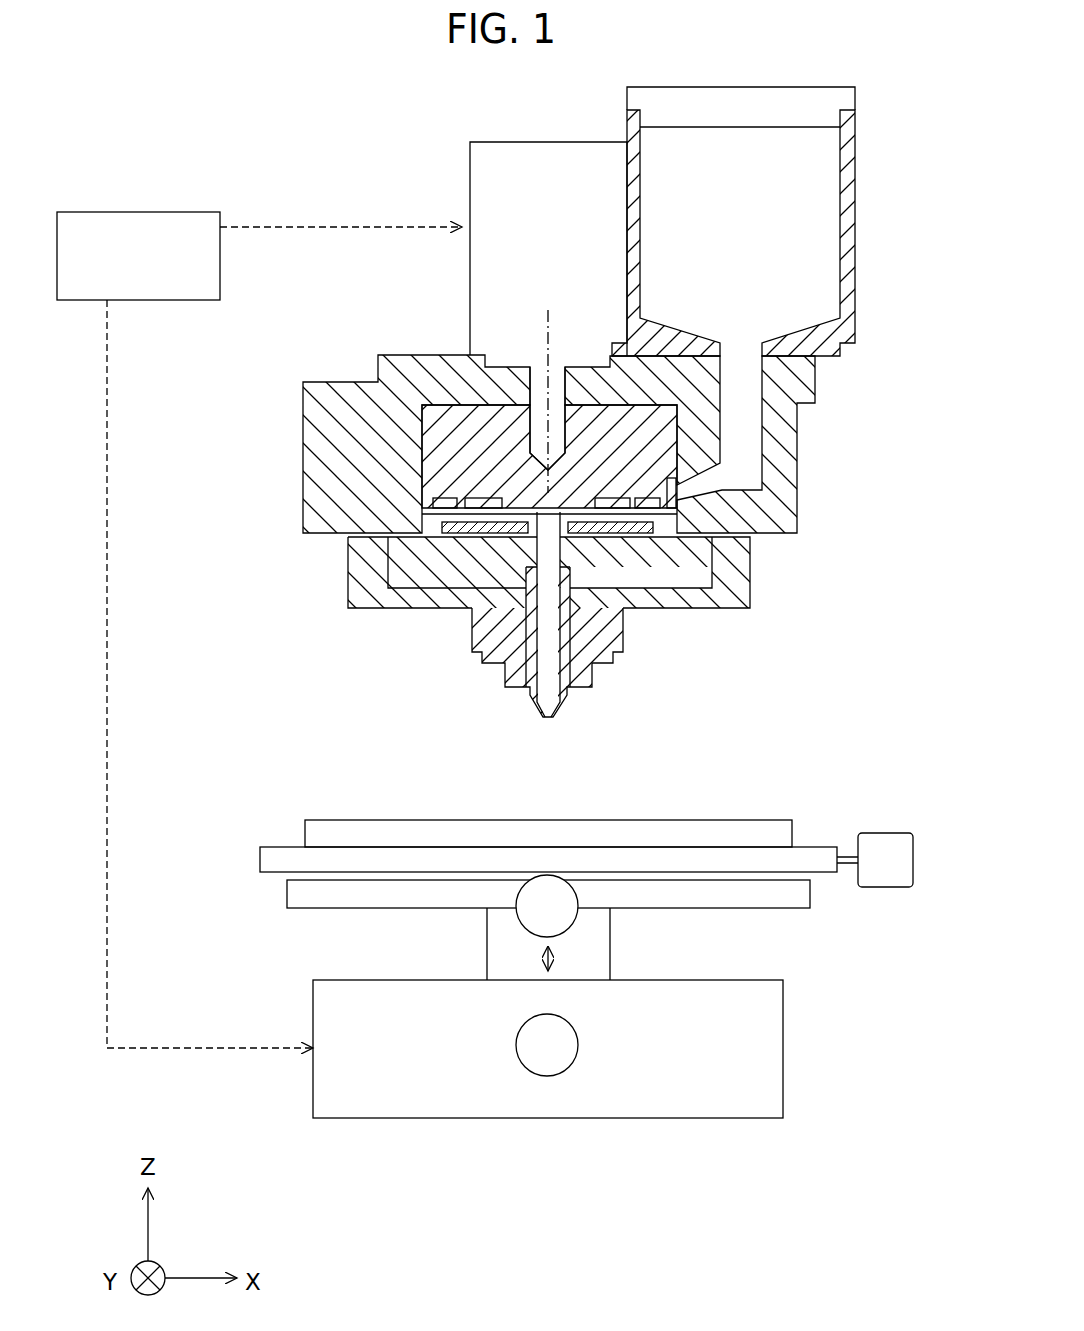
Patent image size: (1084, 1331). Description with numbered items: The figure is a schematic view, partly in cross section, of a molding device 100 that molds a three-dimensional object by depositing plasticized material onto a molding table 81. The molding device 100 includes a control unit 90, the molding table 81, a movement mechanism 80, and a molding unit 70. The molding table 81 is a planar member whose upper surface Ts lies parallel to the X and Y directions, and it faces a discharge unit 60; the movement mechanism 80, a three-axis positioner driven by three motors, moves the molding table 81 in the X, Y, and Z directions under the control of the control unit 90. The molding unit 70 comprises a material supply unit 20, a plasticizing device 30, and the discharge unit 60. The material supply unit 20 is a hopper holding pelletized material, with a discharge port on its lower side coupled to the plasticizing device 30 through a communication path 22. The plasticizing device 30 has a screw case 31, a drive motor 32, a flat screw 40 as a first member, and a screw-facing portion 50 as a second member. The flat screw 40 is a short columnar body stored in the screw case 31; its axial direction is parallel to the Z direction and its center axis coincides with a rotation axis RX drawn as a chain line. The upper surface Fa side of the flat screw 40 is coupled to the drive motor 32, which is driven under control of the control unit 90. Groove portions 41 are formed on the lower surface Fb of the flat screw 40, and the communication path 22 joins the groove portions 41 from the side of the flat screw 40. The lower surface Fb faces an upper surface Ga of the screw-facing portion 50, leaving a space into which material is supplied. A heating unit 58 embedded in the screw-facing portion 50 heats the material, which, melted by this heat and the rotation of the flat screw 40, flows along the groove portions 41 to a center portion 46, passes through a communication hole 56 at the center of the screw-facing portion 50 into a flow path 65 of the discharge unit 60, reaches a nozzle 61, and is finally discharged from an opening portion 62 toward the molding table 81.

The molding device 100 is at (195, 137).
The material supply unit 20 is at (858, 213).
The communication path 22 is at (740, 427).
The plasticizing device 30 is at (340, 285).
The screw case 31 is at (470, 390).
The drive motor 32 is at (470, 178).
The flat screw 40 is at (303, 382).
The groove portions 41 is at (432, 500).
The center portion 46 is at (430, 455).
The screw-facing portion 50 is at (395, 565).
The communication hole 56 is at (620, 587).
The heating unit 58 is at (656, 565).
The discharge unit 60 is at (639, 631).
The nozzle 61 is at (605, 677).
The opening portion 62 is at (550, 717).
The flow path 65 is at (548, 592).
The molding unit 70 is at (340, 168).
The movement mechanism 80 is at (587, 948).
The molding table 81 is at (792, 833).
The control unit 90 is at (137, 212).
The rotation axis RX is at (550, 325).
The upper surface Fa is at (380, 372).
The lower surface Fb is at (385, 553).
The upper surface Ga is at (428, 487).
The upper surface Ts is at (640, 820).